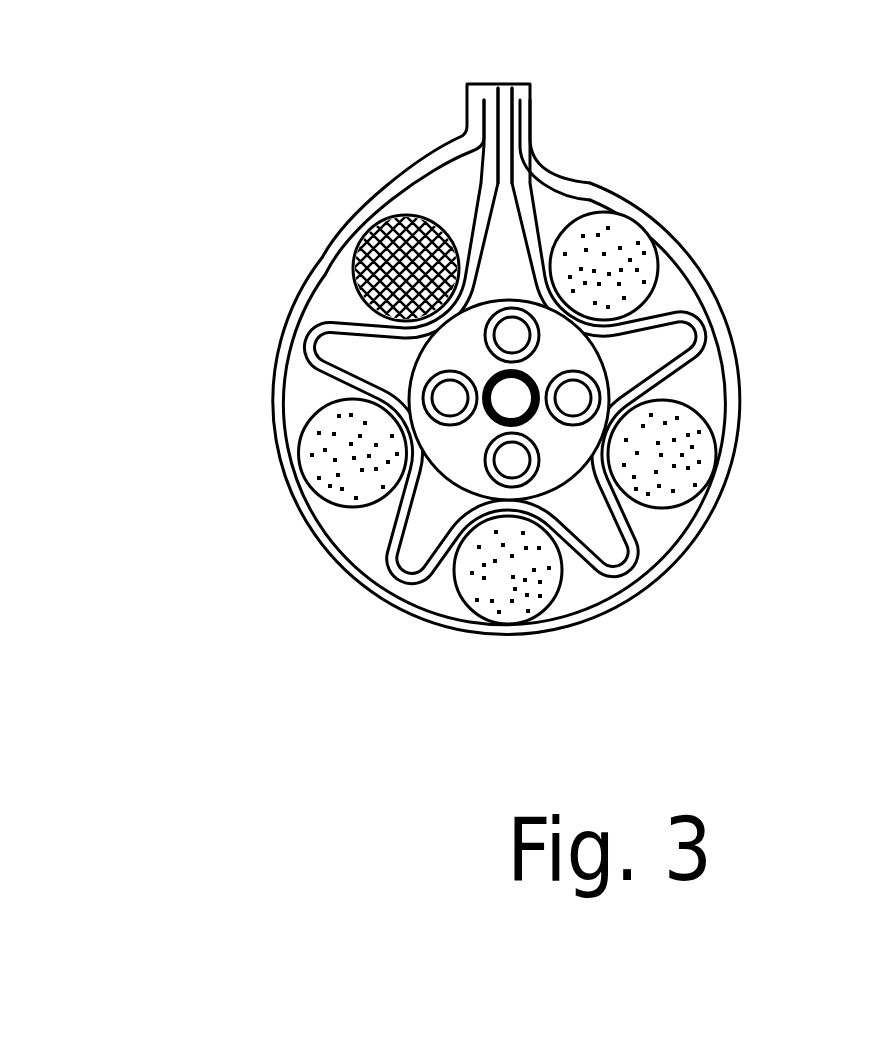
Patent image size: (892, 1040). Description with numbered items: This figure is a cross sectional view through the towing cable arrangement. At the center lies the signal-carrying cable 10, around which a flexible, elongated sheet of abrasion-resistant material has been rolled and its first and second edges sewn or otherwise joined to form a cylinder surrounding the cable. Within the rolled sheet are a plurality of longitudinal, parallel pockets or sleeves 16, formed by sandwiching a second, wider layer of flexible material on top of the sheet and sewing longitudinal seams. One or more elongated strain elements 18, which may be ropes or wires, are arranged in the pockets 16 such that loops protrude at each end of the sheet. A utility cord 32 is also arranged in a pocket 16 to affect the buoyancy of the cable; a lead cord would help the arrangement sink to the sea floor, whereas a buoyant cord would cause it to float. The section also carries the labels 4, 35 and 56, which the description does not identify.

The housing 4 is at (318, 543).
The signal-carrying cable 10 is at (470, 467).
The pockets 16 is at (303, 392).
The elongated strain element 18 is at (607, 260).
The utility cord 32 is at (354, 260).
The inlet neck 35 is at (467, 102).
The tube 56 is at (530, 97).